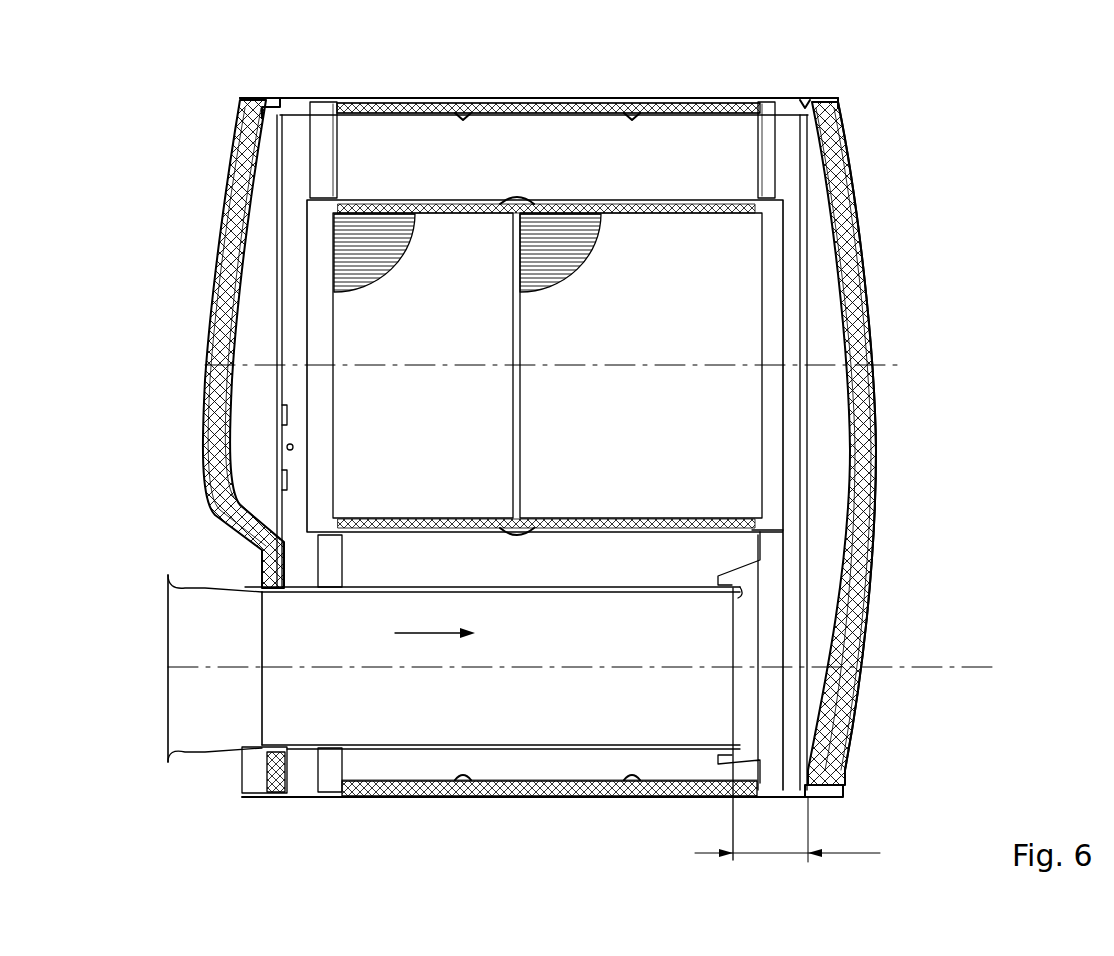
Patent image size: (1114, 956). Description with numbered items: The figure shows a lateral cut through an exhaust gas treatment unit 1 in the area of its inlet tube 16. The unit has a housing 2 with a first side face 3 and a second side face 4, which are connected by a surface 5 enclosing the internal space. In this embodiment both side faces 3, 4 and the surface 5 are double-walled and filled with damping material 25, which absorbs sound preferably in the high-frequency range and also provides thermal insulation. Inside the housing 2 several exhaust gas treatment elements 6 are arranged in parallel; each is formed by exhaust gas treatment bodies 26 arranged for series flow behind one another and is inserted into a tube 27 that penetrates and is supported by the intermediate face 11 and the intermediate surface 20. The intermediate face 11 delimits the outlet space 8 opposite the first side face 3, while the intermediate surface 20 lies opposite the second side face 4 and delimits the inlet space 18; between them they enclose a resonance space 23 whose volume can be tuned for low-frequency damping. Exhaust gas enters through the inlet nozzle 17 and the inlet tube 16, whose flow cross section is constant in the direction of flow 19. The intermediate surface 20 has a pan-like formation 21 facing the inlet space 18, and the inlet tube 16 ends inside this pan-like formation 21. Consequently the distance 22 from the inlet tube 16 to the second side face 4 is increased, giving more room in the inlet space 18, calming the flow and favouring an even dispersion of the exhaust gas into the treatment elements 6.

The filter device 1 is at (1000, 214).
The housing 2 is at (876, 282).
The first side face 3 is at (210, 368).
The second side face 4 is at (875, 410).
The surface 5 is at (556, 104).
The exhaust gas treatment elements 6 is at (545, 493).
The outlet space 8 is at (260, 423).
The intermediate face 11 is at (333, 150).
The inlet tube 16 is at (698, 588).
The inlet nozzle 17 is at (200, 592).
The inlet space 18 is at (835, 463).
The direction of flow 19 is at (432, 640).
The intermediate surface 20 is at (760, 158).
The pan-like formation 21 is at (735, 562).
The distance 22 is at (843, 853).
The resonance space 23 is at (527, 167).
The damping material 25 is at (497, 104).
The exhaust gas treatment bodies 26 is at (447, 442).
The tube 27 is at (455, 215).